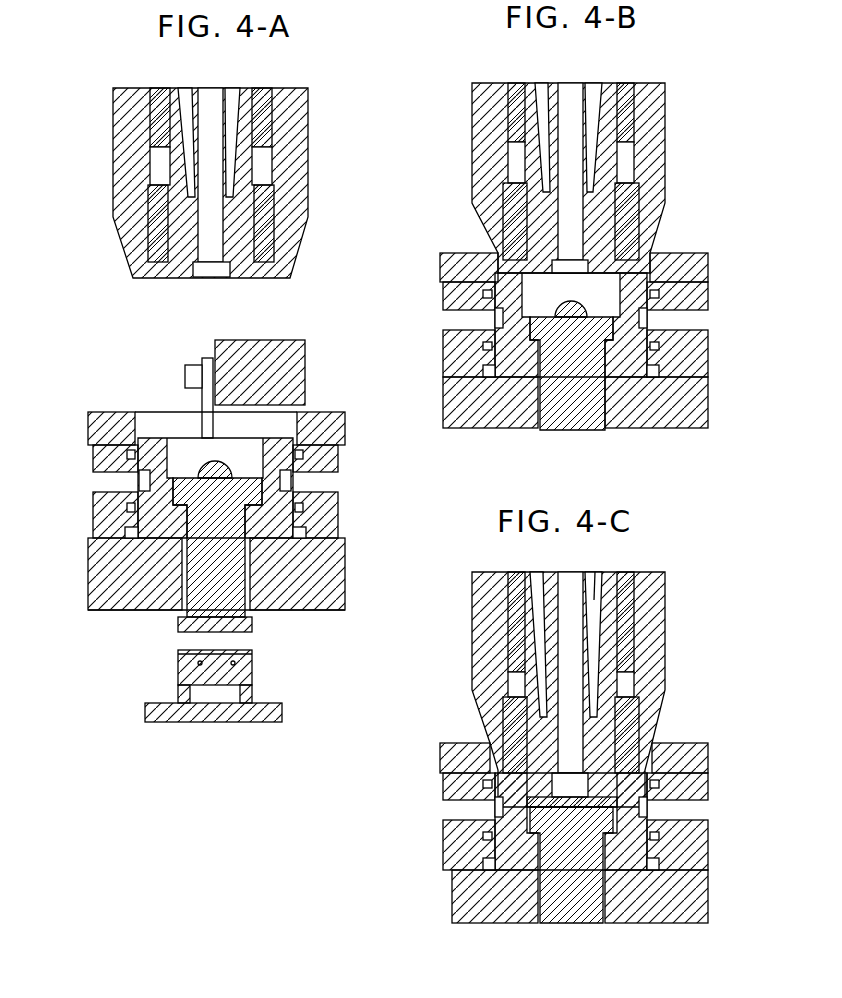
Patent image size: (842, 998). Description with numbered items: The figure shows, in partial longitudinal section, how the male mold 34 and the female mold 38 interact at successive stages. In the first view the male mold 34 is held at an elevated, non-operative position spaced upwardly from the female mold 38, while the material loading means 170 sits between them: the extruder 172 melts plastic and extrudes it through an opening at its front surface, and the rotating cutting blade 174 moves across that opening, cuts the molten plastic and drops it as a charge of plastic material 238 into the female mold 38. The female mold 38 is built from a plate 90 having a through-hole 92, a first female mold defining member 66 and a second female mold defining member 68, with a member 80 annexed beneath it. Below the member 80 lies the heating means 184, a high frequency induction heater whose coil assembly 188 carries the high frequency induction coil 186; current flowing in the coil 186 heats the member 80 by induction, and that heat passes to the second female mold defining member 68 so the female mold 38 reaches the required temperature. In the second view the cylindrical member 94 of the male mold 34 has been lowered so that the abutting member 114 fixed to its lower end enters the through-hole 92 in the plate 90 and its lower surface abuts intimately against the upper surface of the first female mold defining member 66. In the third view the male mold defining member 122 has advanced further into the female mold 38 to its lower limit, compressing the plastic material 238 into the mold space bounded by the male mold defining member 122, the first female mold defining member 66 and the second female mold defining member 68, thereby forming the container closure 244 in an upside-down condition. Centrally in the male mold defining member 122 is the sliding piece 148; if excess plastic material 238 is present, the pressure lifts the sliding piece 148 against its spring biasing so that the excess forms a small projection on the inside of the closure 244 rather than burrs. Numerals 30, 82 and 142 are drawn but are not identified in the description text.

In FIG. 4-A, the mold cavity plate 30 is at (112, 612).
In FIG. 4-B, the mold cavity plate 30 is at (697, 403).
In FIG. 4-C, the mold cavity plate 30 is at (693, 888).
In FIG. 4-A, the male mold 34 is at (216, 213).
In FIG. 4-B, the male mold 34 is at (562, 178).
In FIG. 4-C, the male mold 34 is at (569, 670).
In FIG. 4-A, the female mold 38 is at (204, 489).
In FIG. 4-B, the female mold 38 is at (556, 341).
In FIG. 4-C, the female mold 38 is at (574, 844).
In FIG. 4-A, the first female mold defining member 66 is at (150, 532).
In FIG. 4-B, the first female mold defining member 66 is at (508, 350).
In FIG. 4-C, the first female mold defining member 66 is at (530, 798).
In FIG. 4-A, the second female mold defining member 68 is at (253, 563).
In FIG. 4-B, the second female mold defining member 68 is at (555, 423).
In FIG. 4-C, the second female mold defining member 68 is at (547, 855).
In FIG. 4-A, the member annexed to the female mold 80 is at (252, 623).
In FIG. 4-C, the seal ring 82 is at (645, 803).
In FIG. 4-A, the plate 90 is at (85, 437).
In FIG. 4-B, the plate 90 is at (705, 248).
In FIG. 4-C, the plate 90 is at (695, 738).
In FIG. 4-A, the through-hole 92 is at (130, 430).
In FIG. 4-B, the through-hole 92 is at (630, 262).
In FIG. 4-C, the through-hole 92 is at (500, 740).
In FIG. 4-A, the cylindrical member 94 is at (312, 136).
In FIG. 4-B, the cylindrical member 94 is at (668, 150).
In FIG. 4-C, the cylindrical member 94 is at (668, 618).
In FIG. 4-A, the abutting member 114 is at (156, 280).
In FIG. 4-B, the abutting member 114 is at (640, 233).
In FIG. 4-C, the abutting member 114 is at (642, 731).
In FIG. 4-A, the male mold defining member 122 is at (262, 162).
In FIG. 4-B, the male mold defining member 122 is at (620, 153).
In FIG. 4-C, the male mold defining member 122 is at (622, 705).
In FIG. 4-C, the melt passage 142 is at (605, 598).
In FIG. 4-A, the sliding piece 148 is at (215, 223).
In FIG. 4-B, the sliding piece 148 is at (570, 212).
In FIG. 4-C, the sliding piece 148 is at (562, 655).
In FIG. 4-A, the material loading means 170 is at (227, 364).
In FIG. 4-A, the extruder 172 is at (287, 345).
In FIG. 4-A, the cutting blade 174 is at (202, 402).
In FIG. 4-A, the heating means 184 is at (236, 672).
In FIG. 4-A, the high frequency induction coil 186 is at (233, 663).
In FIG. 4-A, the coil assembly 188 is at (177, 663).
In FIG. 4-A, the plastic material 238 is at (220, 458).
In FIG. 4-B, the plastic material 238 is at (560, 298).
In FIG. 4-C, the container closure 244 is at (587, 803).